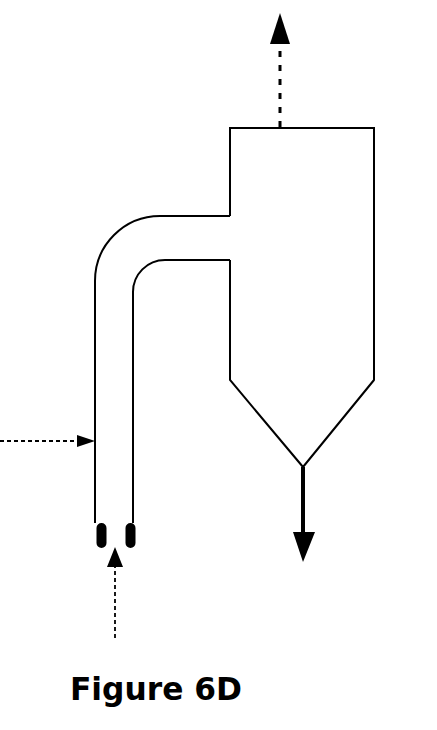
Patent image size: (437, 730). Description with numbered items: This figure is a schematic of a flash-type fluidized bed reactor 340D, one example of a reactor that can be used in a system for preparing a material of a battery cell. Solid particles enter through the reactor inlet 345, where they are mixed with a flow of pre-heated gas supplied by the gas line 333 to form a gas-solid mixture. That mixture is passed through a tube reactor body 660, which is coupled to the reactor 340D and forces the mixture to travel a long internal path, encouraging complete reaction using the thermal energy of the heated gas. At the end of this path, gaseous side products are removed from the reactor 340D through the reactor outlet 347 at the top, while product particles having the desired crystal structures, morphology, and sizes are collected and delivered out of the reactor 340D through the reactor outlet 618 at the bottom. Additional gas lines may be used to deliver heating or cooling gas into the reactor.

The reactor 340D is at (92, 157).
The reactor outlet 347 is at (282, 97).
The reactor inlet 345 is at (28, 441).
The tube reactor body 660 is at (134, 376).
The reactor outlet 618 is at (305, 487).
The gas line 333 is at (118, 596).